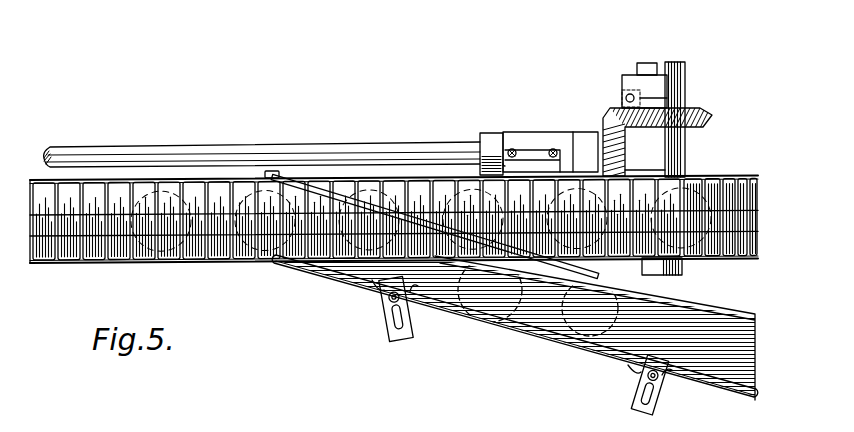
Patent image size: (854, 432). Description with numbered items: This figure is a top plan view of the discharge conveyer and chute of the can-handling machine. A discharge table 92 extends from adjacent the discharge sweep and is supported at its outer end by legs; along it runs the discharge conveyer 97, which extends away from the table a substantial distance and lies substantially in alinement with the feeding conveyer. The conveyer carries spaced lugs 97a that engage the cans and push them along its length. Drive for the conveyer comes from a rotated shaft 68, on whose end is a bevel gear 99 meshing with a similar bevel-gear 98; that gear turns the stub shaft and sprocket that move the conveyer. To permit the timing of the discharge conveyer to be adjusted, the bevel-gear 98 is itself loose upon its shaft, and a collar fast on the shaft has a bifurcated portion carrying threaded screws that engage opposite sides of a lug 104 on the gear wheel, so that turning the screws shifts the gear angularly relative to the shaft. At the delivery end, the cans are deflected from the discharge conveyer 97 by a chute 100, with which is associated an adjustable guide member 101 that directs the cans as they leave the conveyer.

The shaft 68 is at (193, 148).
The discharge table 92 is at (278, 263).
The discharge conveyer 97 is at (206, 193).
The lugs 97a is at (117, 262).
The bevel-gear 98 is at (698, 110).
The gear 99 is at (598, 127).
The chute 100 is at (356, 283).
The adjustable guide member 101 is at (648, 80).
The lug 104 is at (620, 97).